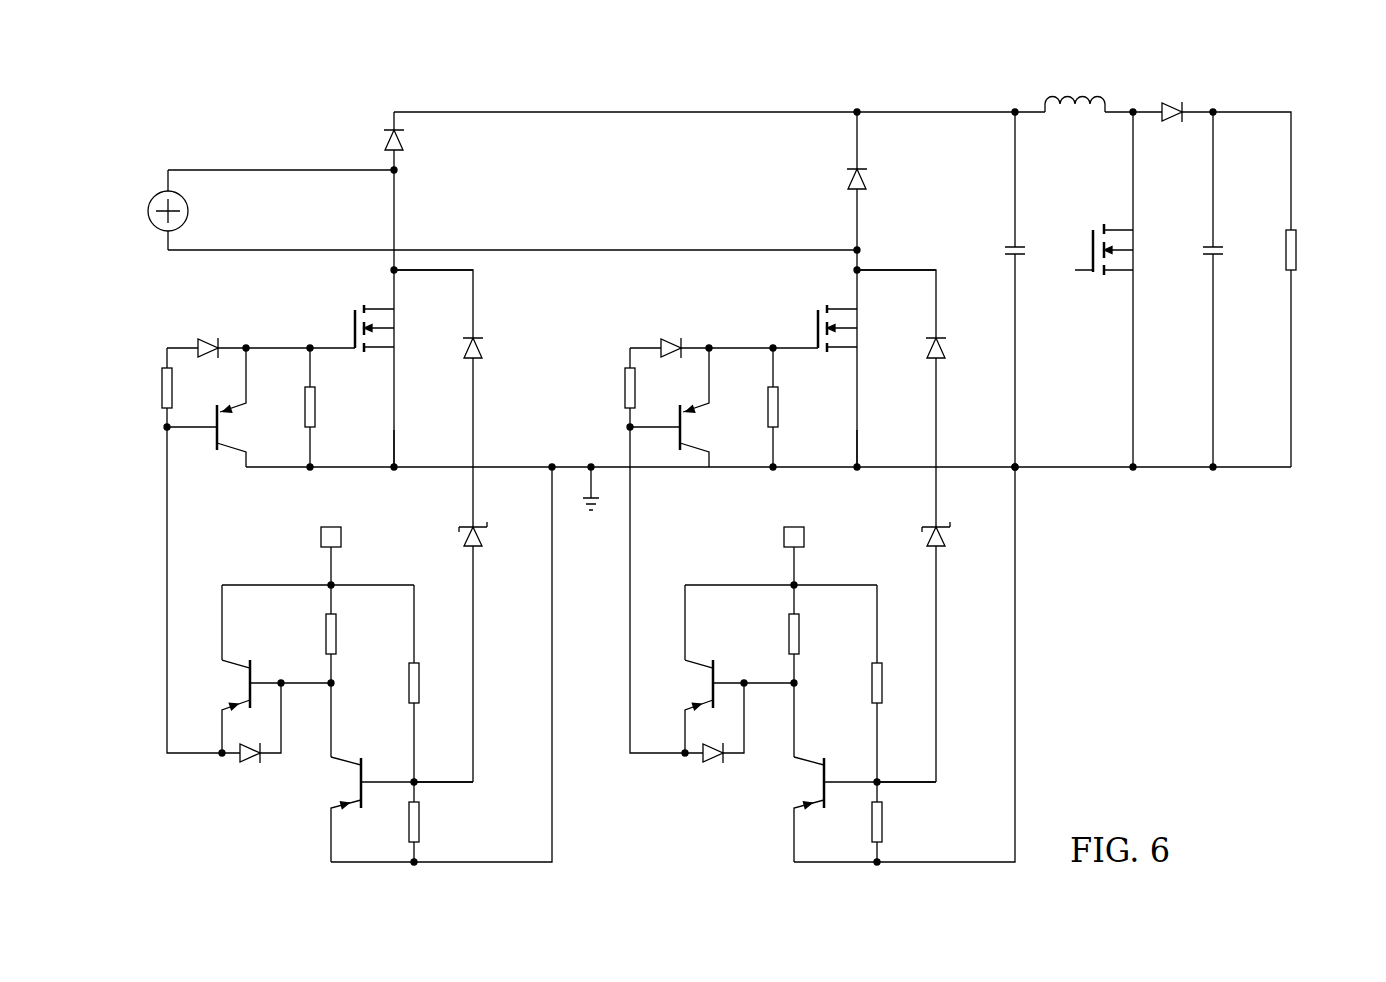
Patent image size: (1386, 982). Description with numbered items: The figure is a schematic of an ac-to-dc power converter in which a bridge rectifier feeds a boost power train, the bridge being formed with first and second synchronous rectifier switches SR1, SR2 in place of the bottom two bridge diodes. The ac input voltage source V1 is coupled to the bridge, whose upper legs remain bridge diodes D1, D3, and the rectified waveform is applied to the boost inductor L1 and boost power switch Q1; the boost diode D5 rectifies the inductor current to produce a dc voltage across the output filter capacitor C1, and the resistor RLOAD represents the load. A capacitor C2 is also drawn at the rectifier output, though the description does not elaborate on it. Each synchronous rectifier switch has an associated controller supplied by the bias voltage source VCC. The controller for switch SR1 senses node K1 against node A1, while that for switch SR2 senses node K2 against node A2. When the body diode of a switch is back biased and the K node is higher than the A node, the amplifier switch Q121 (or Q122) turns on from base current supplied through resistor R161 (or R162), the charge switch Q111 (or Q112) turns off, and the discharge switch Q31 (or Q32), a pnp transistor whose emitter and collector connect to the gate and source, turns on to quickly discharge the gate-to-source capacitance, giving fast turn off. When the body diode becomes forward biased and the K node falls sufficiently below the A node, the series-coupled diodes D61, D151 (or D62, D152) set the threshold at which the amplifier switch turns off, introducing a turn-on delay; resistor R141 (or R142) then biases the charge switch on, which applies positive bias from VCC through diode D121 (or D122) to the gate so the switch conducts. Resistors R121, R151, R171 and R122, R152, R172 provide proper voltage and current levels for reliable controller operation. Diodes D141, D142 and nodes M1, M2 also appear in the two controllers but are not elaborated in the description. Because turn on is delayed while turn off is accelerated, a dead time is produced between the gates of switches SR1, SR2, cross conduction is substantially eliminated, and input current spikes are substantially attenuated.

The ac input voltage source V1 is at (155, 210).
The bridge diode D1 is at (409, 142).
The bridge diode D3 is at (872, 182).
The boost diode D5 is at (1173, 97).
The boost inductor L1 is at (1075, 92).
The boost power switch Q1 is at (1118, 249).
The output filter capacitor C1 is at (1227, 251).
The capacitor C2 is at (1030, 251).
The load resistor RLOAD is at (1322, 250).
The bias voltage source VCC is at (563, 520).
The first synchronous rectifier switch SR1 is at (396, 328).
The second synchronous rectifier switch SR2 is at (859, 328).
The node K K1 is at (433, 288).
The node K K2 is at (896, 288).
The node A A1 is at (410, 448).
The node A A2 is at (873, 448).
The node M1 is at (443, 765).
The node M2 is at (906, 765).
The diode D61 is at (494, 353).
The diode D62 is at (957, 353).
The diode D121 is at (210, 333).
The diode D122 is at (673, 333).
The diode D14-1 D141 is at (254, 771).
The diode D14-2 D142 is at (717, 771).
The diode D151 is at (497, 539).
The diode D152 is at (960, 539).
The discharge switch Q31 is at (249, 407).
The discharge switch Q32 is at (712, 407).
The charge switch Q111 is at (217, 706).
The charge switch Q112 is at (680, 706).
The amplifier switch Q121 is at (326, 809).
The amplifier switch Q122 is at (789, 809).
The resistor R121 is at (144, 388).
The resistor R122 is at (607, 388).
The resistor R141 is at (308, 634).
The resistor R142 is at (771, 634).
The resistor R151 is at (335, 407).
The resistor R152 is at (798, 407).
The resistor R161 is at (391, 683).
The resistor R162 is at (854, 683).
The resistor R171 is at (439, 822).
The resistor R172 is at (902, 822).